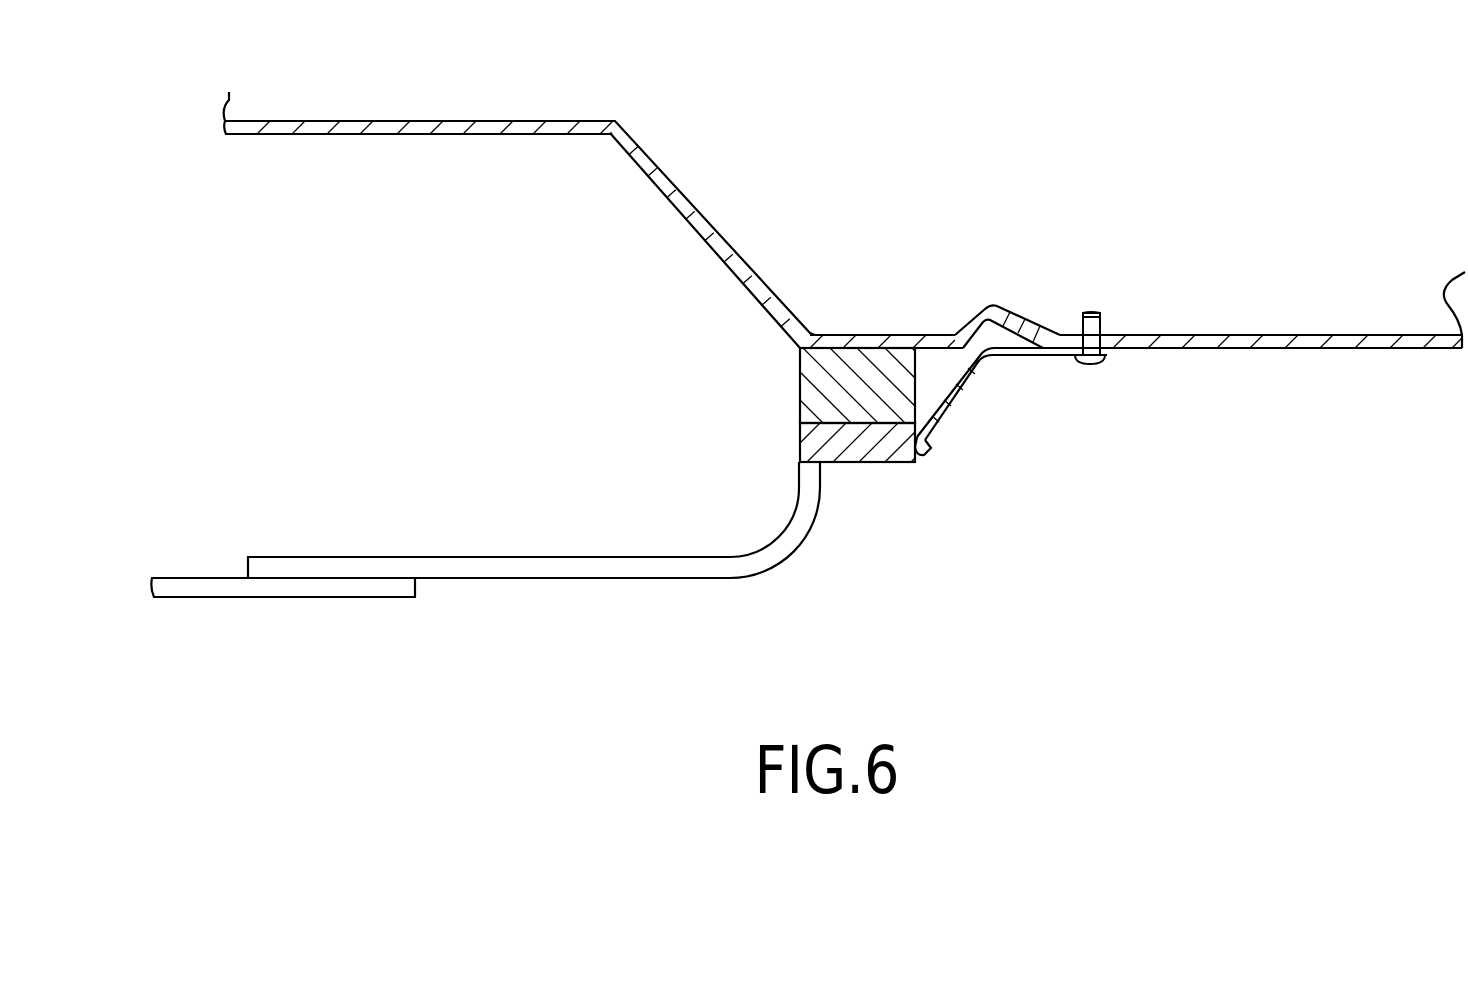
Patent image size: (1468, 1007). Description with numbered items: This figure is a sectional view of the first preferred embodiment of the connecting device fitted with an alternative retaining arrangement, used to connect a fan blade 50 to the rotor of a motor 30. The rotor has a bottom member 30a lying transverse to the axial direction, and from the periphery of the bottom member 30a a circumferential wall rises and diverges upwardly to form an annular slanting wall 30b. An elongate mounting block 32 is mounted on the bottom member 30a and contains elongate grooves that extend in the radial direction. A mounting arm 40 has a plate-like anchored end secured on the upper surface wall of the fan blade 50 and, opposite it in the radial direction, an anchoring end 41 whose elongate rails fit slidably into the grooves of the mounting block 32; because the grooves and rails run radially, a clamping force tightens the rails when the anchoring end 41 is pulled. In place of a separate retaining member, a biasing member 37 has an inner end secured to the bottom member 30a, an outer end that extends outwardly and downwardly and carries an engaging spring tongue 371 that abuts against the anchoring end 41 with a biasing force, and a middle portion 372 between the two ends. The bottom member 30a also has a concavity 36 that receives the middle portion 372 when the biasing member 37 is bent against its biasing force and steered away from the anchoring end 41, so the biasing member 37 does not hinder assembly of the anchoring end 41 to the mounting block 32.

The motor 30 is at (515, 136).
The bottom member 30a is at (1203, 348).
The annular slanting wall 30b is at (677, 216).
The mounting block 32 is at (832, 367).
The concavity 36 is at (970, 320).
The biasing member 37 is at (1025, 352).
The engaging spring tongue 371 is at (929, 446).
The middle portion 372 is at (1001, 356).
The mounting arm 40 is at (518, 590).
The anchoring end 41 is at (823, 447).
The fan blade 50 is at (312, 612).